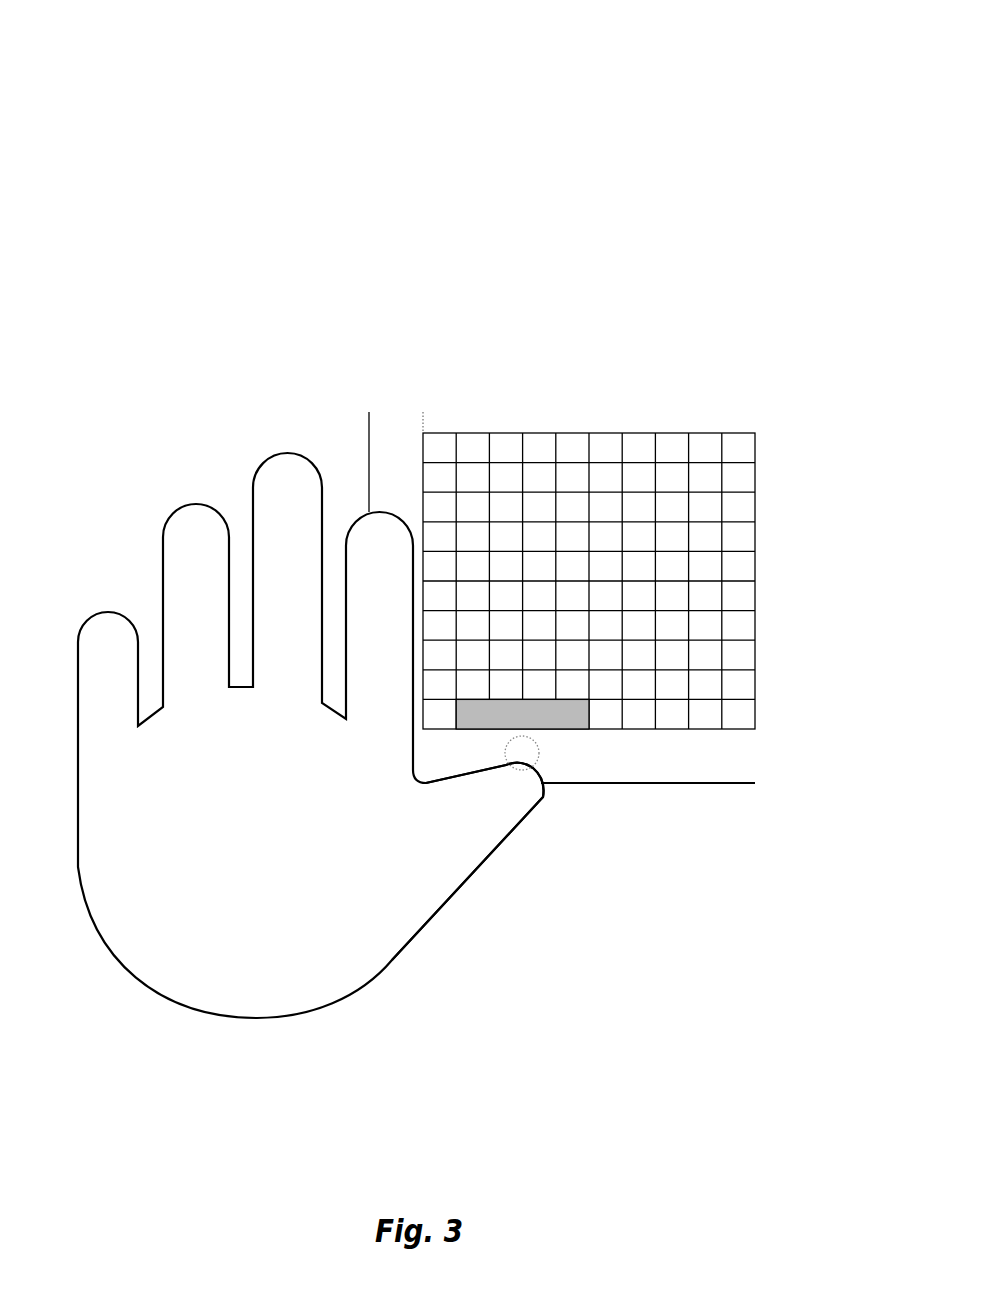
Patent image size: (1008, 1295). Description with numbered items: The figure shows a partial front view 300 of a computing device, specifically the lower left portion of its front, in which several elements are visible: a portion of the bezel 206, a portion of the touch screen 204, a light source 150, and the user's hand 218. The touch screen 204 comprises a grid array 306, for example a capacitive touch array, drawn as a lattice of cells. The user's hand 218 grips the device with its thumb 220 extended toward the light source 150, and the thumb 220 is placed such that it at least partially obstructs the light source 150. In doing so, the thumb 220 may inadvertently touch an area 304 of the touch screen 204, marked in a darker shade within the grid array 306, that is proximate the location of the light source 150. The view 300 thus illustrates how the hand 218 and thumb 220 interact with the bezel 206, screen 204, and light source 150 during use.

The partial front view 300 is at (447, 46).
The user's hand 218 is at (143, 945).
The thumb 220 is at (483, 807).
The bezel 206 is at (385, 420).
The grid array 306 is at (677, 448).
The touch screen 204 is at (760, 543).
The area 304 is at (569, 715).
The light source 150 is at (542, 760).